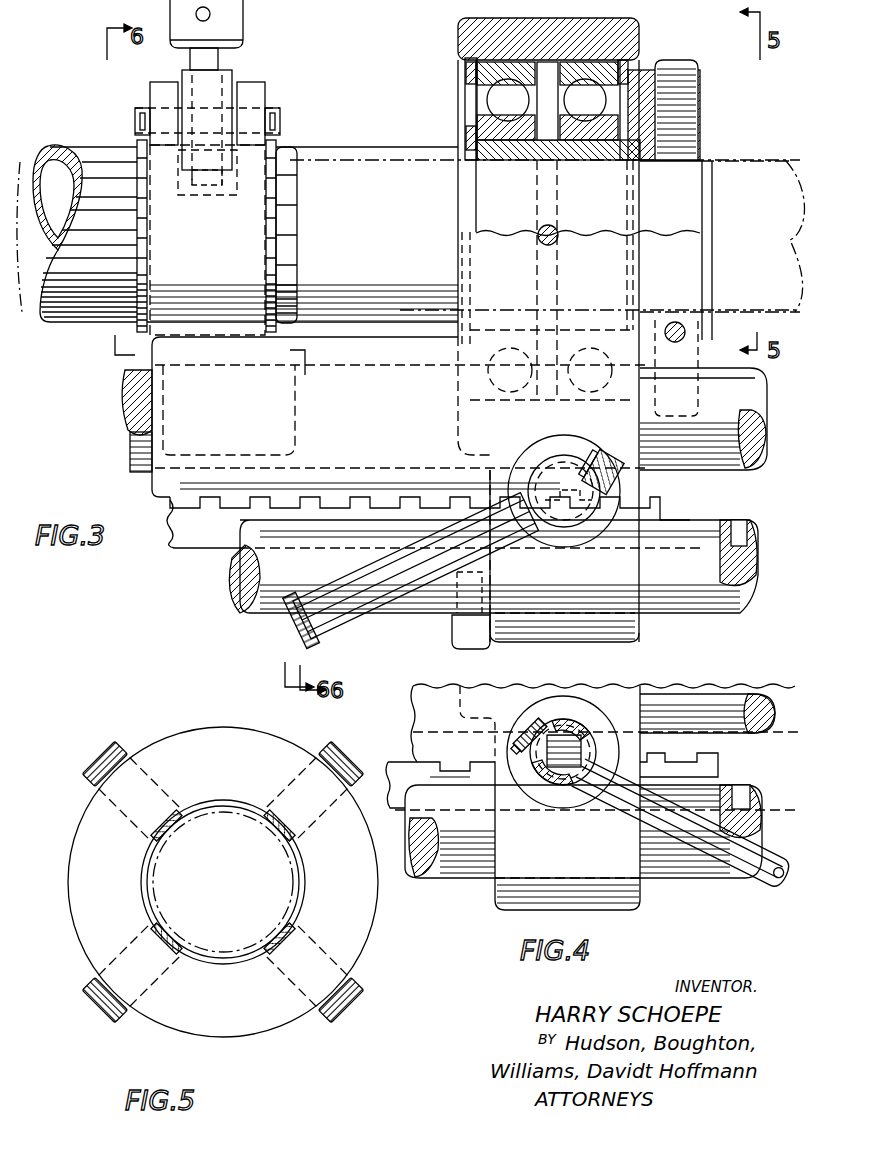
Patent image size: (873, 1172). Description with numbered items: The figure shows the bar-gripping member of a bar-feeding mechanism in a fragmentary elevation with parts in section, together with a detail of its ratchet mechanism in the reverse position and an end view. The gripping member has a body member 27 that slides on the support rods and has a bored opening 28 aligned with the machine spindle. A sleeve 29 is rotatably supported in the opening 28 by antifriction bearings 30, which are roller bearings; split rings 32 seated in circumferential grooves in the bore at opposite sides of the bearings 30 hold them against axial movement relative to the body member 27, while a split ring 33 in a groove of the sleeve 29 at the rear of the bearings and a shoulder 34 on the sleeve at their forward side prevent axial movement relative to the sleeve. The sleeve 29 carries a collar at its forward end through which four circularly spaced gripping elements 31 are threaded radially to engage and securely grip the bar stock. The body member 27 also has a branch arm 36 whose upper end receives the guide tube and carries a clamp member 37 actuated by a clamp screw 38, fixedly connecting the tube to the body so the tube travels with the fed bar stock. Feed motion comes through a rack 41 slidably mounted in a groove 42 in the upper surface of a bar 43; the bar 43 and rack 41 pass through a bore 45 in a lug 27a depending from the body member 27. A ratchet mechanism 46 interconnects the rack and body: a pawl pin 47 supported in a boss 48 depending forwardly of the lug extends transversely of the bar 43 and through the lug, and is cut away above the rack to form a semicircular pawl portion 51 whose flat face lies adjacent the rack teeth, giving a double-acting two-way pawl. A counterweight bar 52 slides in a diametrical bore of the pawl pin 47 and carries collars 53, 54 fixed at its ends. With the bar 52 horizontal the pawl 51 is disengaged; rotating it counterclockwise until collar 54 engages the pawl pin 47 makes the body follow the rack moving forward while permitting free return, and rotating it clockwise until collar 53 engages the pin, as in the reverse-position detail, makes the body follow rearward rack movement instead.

In FIG. 3, the body member 27 is at (458, 36).
In FIG. 4, the body member 27 is at (605, 797).
In FIG. 5, the body member 27 is at (66, 860).
In FIG. 3, the lug 27a is at (600, 642).
In FIG. 3, the bored opening 28 is at (465, 70).
In FIG. 3, the sleeve 29 is at (702, 100).
In FIG. 5, the sleeve 29 is at (236, 726).
In FIG. 3, the antifriction bearings 30 is at (478, 110).
In FIG. 3, the gripping elements 31 is at (688, 60).
In FIG. 5, the gripping elements 31 is at (100, 760).
In FIG. 3, the split rings 32 is at (466, 80).
In FIG. 3, the split ring 33 is at (468, 136).
In FIG. 3, the shoulder 34 is at (546, 100).
In FIG. 3, the branch arm 36 is at (160, 90).
In FIG. 3, the clamp member 37 is at (226, 202).
In FIG. 3, the clamp screw 38 is at (240, 28).
In FIG. 3, the rack 41 is at (186, 556).
In FIG. 4, the rack 41 is at (720, 762).
In FIG. 3, the groove 42 is at (735, 520).
In FIG. 3, the bar 43 is at (735, 612).
In FIG. 4, the bar 43 is at (758, 795).
In FIG. 3, the bore 45 is at (550, 617).
In FIG. 3, the ratchet mechanism 46 is at (572, 445).
In FIG. 3, the pawl pin 47 is at (576, 455).
In FIG. 4, the pawl pin 47 is at (554, 800).
In FIG. 4, the boss 48 is at (592, 798).
In FIG. 3, the pawl portion 51 is at (538, 455).
In FIG. 4, the pawl portion 51 is at (580, 742).
In FIG. 3, the counterweight bar 52 is at (322, 626).
In FIG. 4, the counterweight bar 52 is at (770, 816).
In FIG. 3, the collar 53 is at (300, 598).
In FIG. 4, the collar 53 is at (553, 705).
In FIG. 3, the collar 54 is at (610, 492).